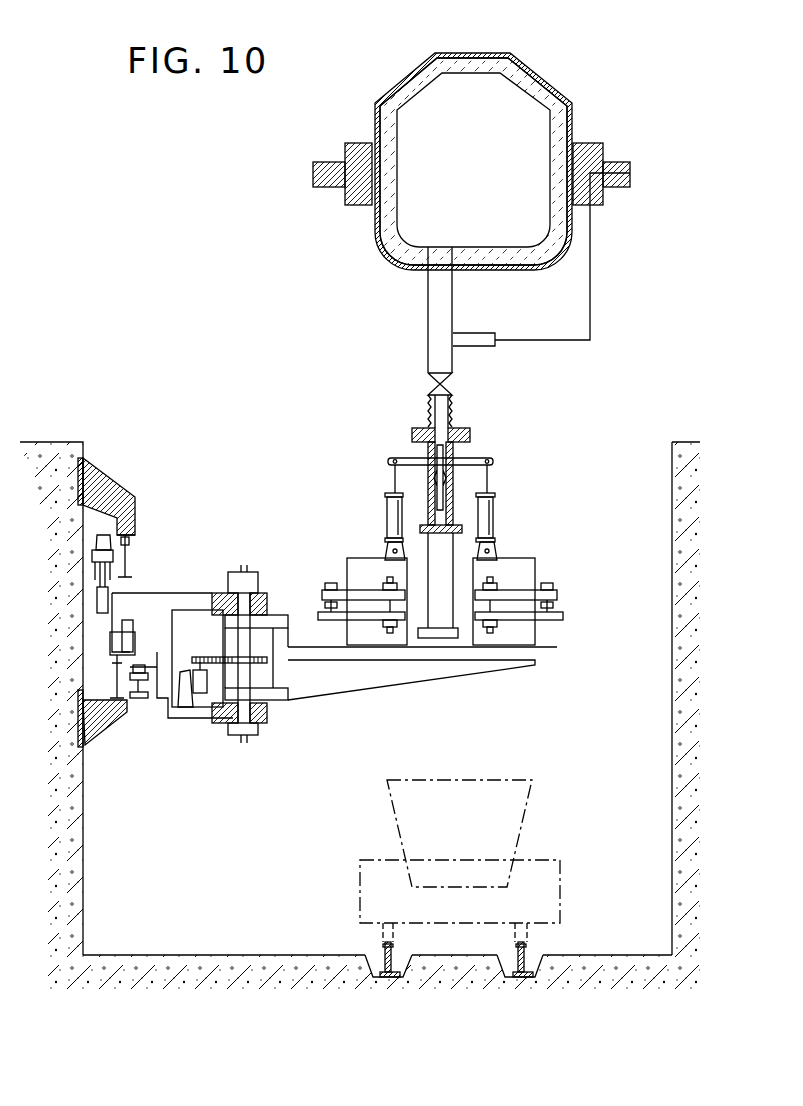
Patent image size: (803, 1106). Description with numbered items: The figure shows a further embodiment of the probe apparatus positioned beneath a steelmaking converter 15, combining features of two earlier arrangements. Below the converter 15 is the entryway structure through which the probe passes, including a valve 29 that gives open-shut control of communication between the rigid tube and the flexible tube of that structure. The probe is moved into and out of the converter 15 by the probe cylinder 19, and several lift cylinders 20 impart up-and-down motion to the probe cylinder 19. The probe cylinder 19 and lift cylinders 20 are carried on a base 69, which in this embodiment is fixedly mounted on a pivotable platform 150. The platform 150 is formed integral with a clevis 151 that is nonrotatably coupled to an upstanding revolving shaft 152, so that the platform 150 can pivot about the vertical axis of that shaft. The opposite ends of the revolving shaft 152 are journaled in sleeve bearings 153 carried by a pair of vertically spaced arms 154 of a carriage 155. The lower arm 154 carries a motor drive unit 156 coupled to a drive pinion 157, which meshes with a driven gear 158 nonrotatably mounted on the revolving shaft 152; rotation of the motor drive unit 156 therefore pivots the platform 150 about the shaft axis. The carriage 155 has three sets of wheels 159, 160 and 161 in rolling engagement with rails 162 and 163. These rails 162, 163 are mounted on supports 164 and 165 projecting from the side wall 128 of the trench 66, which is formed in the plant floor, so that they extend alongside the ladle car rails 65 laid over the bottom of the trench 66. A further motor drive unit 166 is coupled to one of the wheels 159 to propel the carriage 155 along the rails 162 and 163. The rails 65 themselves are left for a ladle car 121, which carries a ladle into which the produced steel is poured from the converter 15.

The converter 15 is at (582, 108).
The valve 29 is at (436, 381).
The probe cylinder 19 is at (438, 622).
The lift cylinders 20 is at (493, 516).
The base 69 is at (523, 632).
The pivotable platform 150 is at (345, 655).
The clevis 151 is at (285, 606).
The revolving shaft 152 is at (248, 676).
The sleeve bearings 153 is at (262, 590).
The arms 154 is at (190, 595).
The carriage 155 is at (145, 594).
The motor drive unit 156 is at (200, 696).
The drive pinion 157 is at (192, 663).
The driven gear 158 is at (275, 675).
The wheels 159 is at (92, 555).
The wheels 160 is at (110, 625).
The wheels 161 is at (148, 696).
The rail 162 is at (130, 547).
The rail 163 is at (118, 676).
The support 164 is at (110, 490).
The support 165 is at (97, 728).
The motor drive unit 166 is at (95, 600).
The side wall 128 is at (83, 445).
The trench 66 is at (628, 452).
The ladle car 121 is at (558, 858).
The rails 65 is at (385, 960).